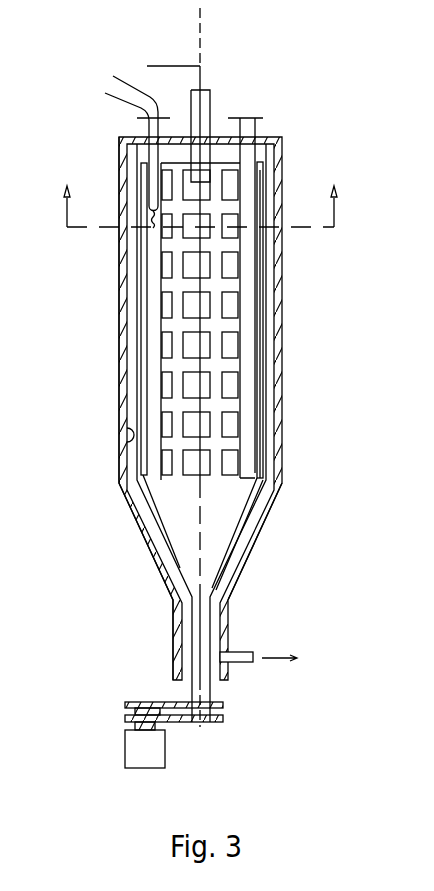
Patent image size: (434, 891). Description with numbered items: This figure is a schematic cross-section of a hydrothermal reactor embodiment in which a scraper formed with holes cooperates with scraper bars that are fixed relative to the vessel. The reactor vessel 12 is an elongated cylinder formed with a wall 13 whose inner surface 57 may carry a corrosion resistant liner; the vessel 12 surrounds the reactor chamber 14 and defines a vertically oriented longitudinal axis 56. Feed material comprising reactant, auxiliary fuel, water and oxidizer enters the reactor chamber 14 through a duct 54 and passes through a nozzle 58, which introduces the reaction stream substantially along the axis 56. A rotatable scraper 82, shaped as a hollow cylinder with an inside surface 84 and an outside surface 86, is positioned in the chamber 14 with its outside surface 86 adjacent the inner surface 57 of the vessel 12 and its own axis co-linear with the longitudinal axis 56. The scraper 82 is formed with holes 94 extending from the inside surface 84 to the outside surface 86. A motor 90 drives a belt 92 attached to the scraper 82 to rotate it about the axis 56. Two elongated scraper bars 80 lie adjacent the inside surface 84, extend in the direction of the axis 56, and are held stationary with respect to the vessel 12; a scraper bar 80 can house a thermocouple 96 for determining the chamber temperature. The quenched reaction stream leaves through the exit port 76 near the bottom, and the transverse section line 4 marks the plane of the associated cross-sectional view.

The section line 4 is at (200, 191).
The reactor vessel 12 is at (281, 337).
The wall 13 is at (120, 374).
The reactor chamber 14 is at (173, 493).
The duct 54 is at (175, 66).
The longitudinal axis 56 is at (200, 13).
The inner surface 57 is at (128, 431).
The nozzle 58 is at (212, 97).
The exit port 76 is at (242, 664).
The scraper bar 80 is at (247, 283).
The scraper 82 is at (137, 288).
The inside surface 84 is at (236, 524).
The outside surface 86 is at (241, 572).
The motor 90 is at (166, 752).
The belt 92 is at (175, 703).
The holes 94 is at (235, 470).
The thermocouple 96 is at (114, 98).